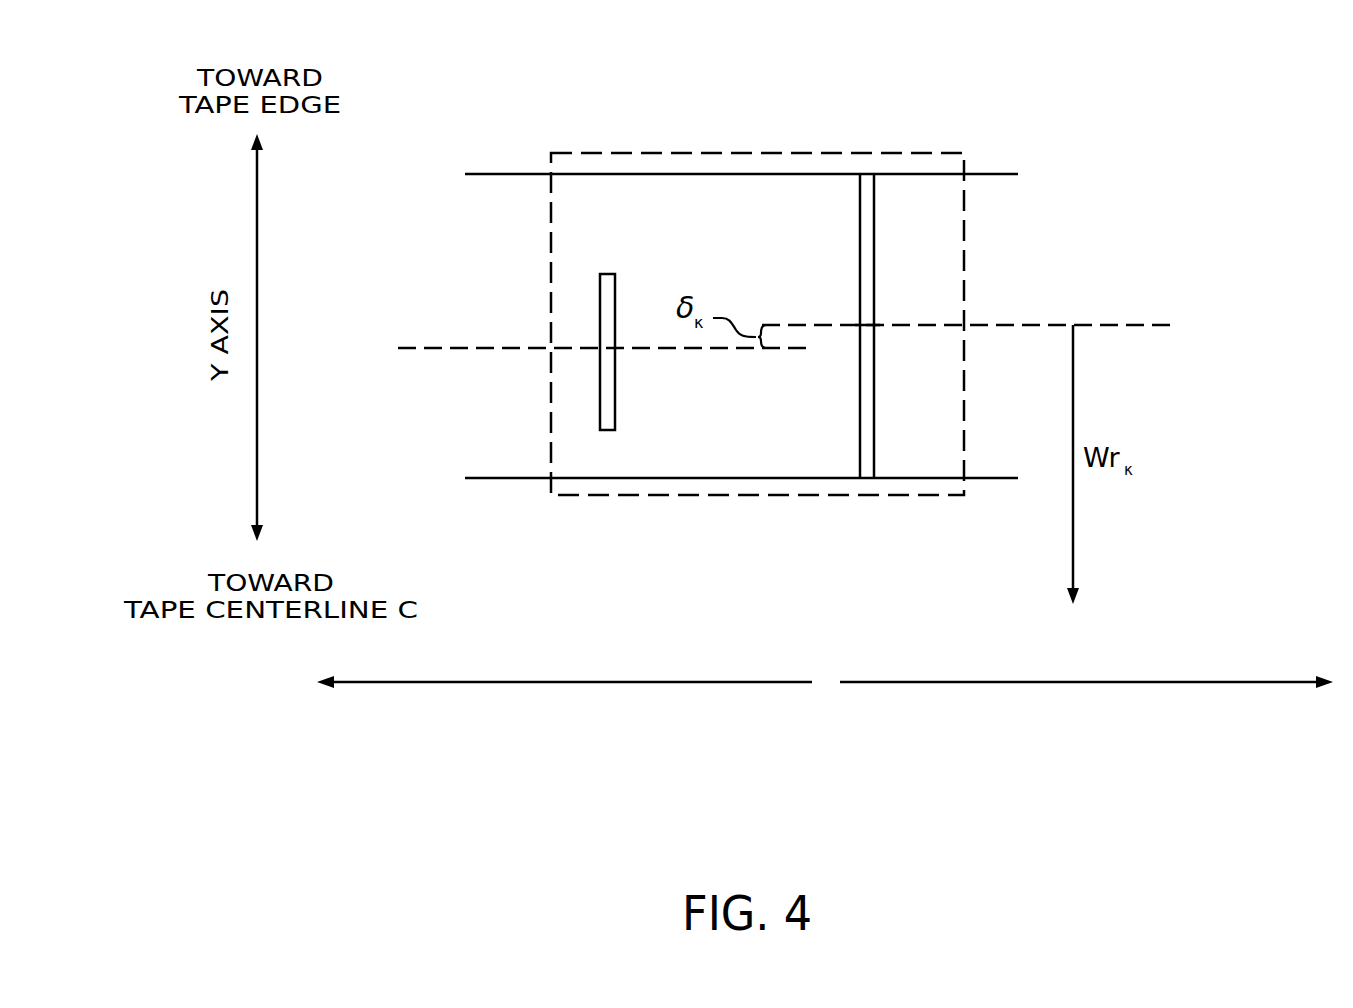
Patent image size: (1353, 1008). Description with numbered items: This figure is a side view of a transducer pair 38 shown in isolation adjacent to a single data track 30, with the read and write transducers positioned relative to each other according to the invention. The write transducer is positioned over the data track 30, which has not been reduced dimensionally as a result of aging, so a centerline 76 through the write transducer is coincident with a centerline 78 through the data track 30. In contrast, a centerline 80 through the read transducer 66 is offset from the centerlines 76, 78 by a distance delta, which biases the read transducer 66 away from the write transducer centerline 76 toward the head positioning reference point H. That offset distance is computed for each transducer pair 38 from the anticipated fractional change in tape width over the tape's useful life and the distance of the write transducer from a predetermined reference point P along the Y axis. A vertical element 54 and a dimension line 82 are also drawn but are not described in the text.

The data track 30 is at (985, 237).
The transducer pair 38 is at (718, 153).
The read element 54 is at (876, 455).
The read transducer 66 is at (615, 415).
The write transducer centerline 76 is at (866, 325).
The data track centerline 78 is at (1173, 325).
The read transducer centerline 80 is at (398, 348).
The head length dimension L 82 is at (1135, 682).